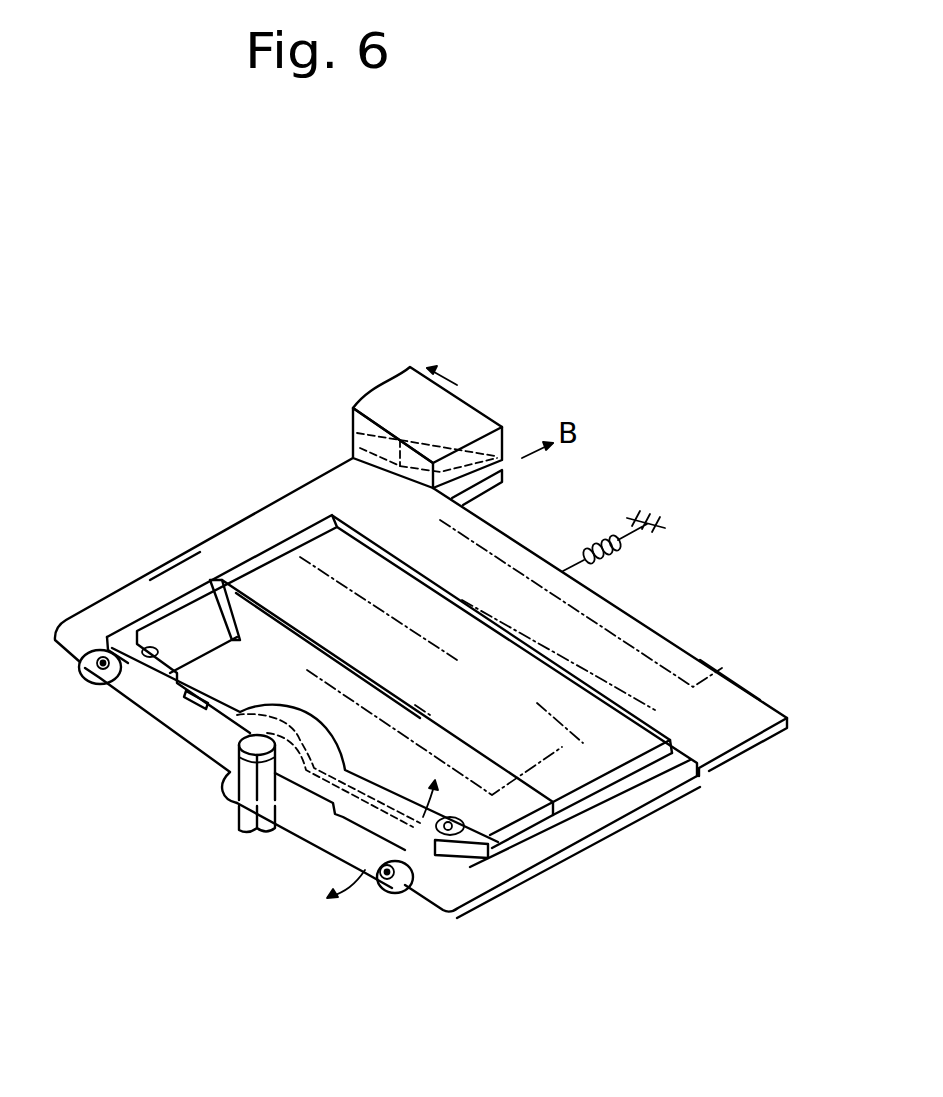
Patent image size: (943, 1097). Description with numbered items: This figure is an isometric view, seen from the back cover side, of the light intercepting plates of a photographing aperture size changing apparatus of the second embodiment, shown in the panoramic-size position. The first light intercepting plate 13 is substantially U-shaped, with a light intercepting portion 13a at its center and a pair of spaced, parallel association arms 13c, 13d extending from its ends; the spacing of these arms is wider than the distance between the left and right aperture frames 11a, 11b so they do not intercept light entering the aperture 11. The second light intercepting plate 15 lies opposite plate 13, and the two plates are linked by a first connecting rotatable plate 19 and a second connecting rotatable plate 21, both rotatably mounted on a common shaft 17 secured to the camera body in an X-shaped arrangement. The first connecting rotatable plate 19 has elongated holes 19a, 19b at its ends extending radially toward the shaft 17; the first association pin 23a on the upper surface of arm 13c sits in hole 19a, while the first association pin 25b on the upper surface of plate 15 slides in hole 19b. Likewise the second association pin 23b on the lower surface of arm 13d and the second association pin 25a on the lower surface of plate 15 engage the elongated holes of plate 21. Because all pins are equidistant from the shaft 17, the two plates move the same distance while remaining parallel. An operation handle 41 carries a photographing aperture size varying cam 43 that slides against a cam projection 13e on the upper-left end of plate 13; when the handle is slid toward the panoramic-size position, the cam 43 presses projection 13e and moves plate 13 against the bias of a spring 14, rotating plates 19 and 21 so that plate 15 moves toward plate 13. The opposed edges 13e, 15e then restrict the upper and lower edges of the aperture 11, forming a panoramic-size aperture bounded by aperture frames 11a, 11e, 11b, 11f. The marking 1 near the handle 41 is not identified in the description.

The movement direction of slider 1 is at (433, 360).
The operation handle 41 is at (460, 410).
The photographing aperture size varying cam 43 is at (350, 448).
The first light intercepting plate 13 is at (507, 537).
The light intercepting portion 13a is at (705, 674).
The association arm 13c is at (213, 553).
The association arm 13d is at (590, 817).
The cam projection 13e is at (425, 583).
The spring 14 is at (612, 548).
The second light intercepting plate 15 is at (520, 815).
The opposed edge 15e is at (275, 601).
The aperture 11 is at (590, 736).
The left aperture frame 11a is at (303, 563).
The right aperture frame 11b is at (555, 709).
The aperture frame 11e is at (460, 598).
The aperture frame 11f is at (423, 702).
The common shaft 17 is at (220, 767).
The first connecting rotatable plate 19 is at (190, 722).
The elongated hole 19a is at (83, 677).
The elongated hole 19b is at (430, 852).
The second connecting rotatable plate 21 is at (313, 828).
The first association pin 23a is at (117, 665).
The second association pin 23b is at (395, 887).
The second association pin 25a is at (150, 645).
The first association pin 25b is at (498, 812).